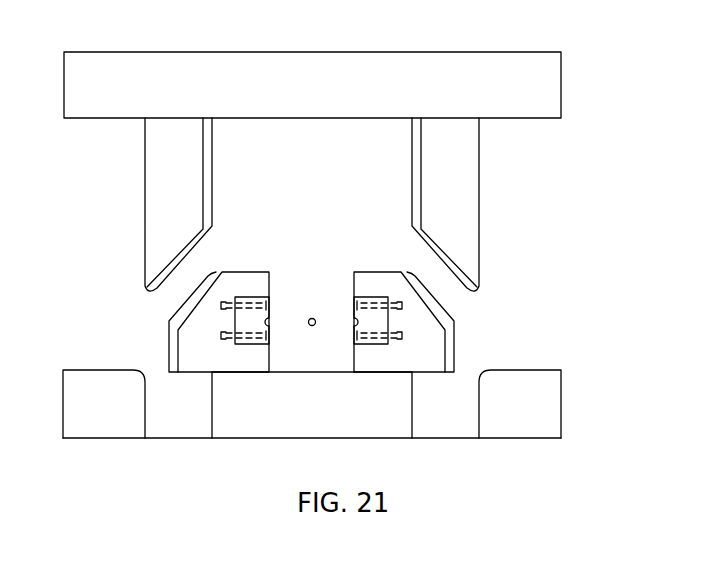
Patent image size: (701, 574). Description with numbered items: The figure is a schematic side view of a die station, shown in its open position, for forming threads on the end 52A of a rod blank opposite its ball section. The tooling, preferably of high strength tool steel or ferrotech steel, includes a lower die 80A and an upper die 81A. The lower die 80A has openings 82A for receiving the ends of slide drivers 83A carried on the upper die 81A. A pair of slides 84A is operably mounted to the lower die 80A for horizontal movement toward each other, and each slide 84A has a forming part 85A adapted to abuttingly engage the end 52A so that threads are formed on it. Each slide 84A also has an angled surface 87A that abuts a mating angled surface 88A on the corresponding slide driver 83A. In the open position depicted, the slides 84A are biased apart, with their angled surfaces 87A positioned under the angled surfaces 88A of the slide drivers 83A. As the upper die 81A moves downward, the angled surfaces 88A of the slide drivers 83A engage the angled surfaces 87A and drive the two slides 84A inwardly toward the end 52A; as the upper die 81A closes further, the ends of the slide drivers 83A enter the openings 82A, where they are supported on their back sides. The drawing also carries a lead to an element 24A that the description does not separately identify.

The lower die 80A is at (603, 85).
The upper die 81A is at (578, 390).
The opening 82A is at (177, 423).
The slide driver 83A is at (155, 221).
The slide 84A is at (192, 348).
The forming part 85A is at (365, 343).
The angled surface 87A is at (183, 310).
The angled surface 88A is at (198, 253).
The terminal pin 24A is at (310, 317).
The end 52A is at (316, 319).